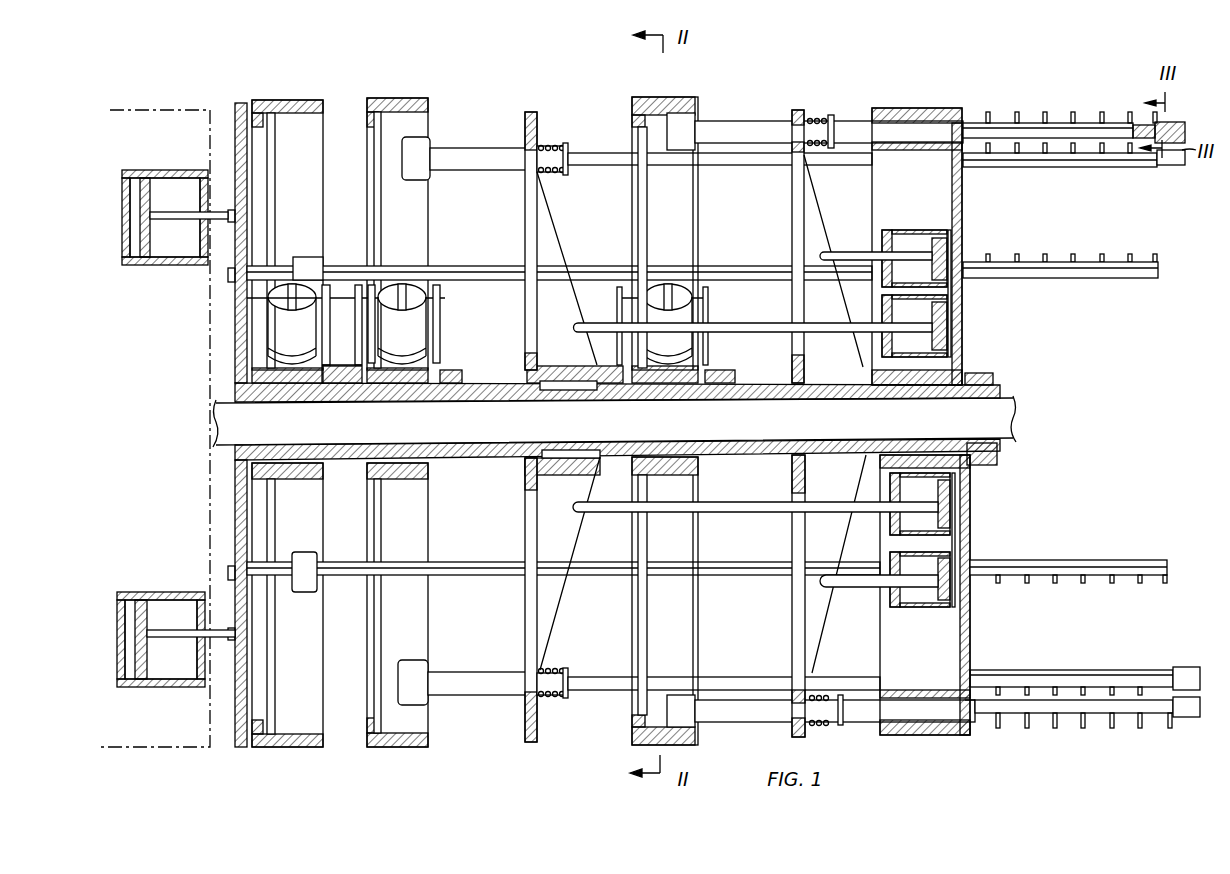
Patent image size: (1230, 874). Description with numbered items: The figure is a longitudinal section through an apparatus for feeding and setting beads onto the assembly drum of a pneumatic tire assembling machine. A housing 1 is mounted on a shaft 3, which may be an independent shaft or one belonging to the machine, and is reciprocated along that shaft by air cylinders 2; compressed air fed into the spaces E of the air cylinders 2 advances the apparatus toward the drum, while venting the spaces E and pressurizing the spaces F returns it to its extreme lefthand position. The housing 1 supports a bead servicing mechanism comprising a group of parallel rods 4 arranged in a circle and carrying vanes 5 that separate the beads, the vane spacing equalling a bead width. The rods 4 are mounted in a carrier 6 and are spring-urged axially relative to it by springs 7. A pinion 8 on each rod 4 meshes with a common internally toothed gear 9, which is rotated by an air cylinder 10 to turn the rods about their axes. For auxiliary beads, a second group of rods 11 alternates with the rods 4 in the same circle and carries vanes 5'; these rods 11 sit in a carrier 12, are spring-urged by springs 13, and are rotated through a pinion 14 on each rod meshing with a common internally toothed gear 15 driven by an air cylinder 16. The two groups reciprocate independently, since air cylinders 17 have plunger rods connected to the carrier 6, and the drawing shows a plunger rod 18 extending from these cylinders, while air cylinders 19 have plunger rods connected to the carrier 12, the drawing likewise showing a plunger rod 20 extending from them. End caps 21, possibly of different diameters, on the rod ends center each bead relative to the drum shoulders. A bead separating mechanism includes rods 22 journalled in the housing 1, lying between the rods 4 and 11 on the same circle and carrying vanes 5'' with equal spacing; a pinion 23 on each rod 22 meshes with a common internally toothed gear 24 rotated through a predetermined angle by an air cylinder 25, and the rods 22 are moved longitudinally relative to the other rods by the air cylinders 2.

The housing 1 is at (236, 452).
The air cylinders 2 is at (150, 268).
The shaft 3 is at (235, 400).
The rods 4 is at (1138, 125).
The vanes 5 is at (1060, 106).
The vanes 5' is at (1059, 173).
The vanes 5'' is at (1071, 232).
The carrier 6 is at (797, 110).
The springs 7 is at (822, 118).
The pinion 8 is at (690, 125).
The internally toothed gear 9 is at (640, 97).
The air cylinder 10 is at (692, 312).
The rods 11 is at (590, 153).
The carrier 12 is at (530, 112).
The springs 13 is at (548, 147).
The pinion 14 is at (426, 152).
The internally toothed gear 15 is at (382, 98).
The air cylinder 16 is at (412, 330).
The air cylinders 17 is at (928, 232).
The piston rod 18 is at (847, 252).
The air cylinders 19 is at (953, 302).
The piston rod 20 is at (765, 323).
The end caps 21 is at (1170, 122).
The rods 22 is at (1115, 278).
The pinion 23 is at (296, 257).
The internally toothed gear 24 is at (262, 100).
The air cylinder 25 is at (280, 332).
The spaces E is at (132, 172).
The spaces F is at (172, 184).